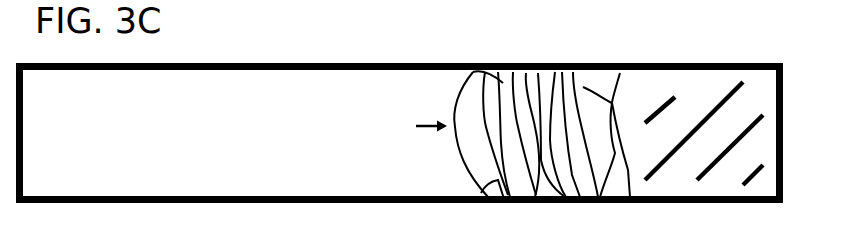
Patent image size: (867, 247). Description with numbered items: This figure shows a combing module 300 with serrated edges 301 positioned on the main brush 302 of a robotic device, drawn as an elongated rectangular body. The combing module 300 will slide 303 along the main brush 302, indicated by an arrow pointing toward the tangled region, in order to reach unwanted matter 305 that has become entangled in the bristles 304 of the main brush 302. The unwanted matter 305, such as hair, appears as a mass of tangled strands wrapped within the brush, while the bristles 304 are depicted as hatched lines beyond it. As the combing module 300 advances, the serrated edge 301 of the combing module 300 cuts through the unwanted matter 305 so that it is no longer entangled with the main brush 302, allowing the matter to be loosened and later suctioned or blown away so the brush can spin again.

The combing module 300 is at (400, 133).
The serrated edges 301 is at (395, 80).
The main brush 302 is at (399, 217).
The slide 303 is at (436, 110).
The bristles 304 is at (717, 110).
The unwanted matter 305 is at (582, 110).